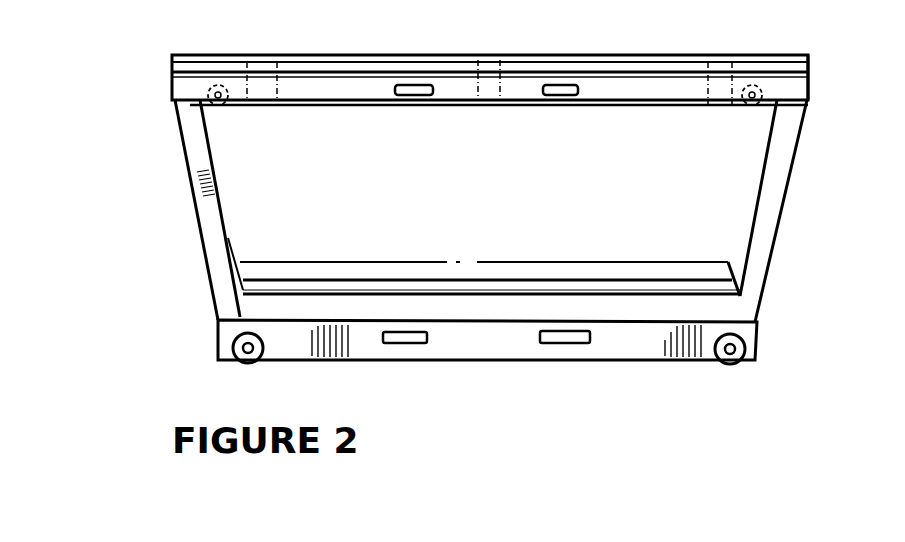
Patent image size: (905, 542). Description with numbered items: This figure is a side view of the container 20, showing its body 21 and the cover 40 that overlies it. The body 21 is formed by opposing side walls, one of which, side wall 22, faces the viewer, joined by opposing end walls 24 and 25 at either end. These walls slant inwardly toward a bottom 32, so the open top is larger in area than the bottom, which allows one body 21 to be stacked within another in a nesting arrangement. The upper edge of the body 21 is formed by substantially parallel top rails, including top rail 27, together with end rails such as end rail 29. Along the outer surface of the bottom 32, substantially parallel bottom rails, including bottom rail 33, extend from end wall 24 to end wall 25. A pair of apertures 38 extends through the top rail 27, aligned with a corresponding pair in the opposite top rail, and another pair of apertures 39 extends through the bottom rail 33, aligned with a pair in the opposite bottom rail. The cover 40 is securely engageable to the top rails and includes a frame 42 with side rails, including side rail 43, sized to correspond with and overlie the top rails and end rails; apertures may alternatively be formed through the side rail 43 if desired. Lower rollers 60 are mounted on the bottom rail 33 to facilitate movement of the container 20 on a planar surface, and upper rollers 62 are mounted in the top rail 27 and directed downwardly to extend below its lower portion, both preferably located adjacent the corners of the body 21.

The container 20 is at (150, 238).
The body 21 is at (198, 280).
The side wall 22 is at (725, 210).
The end wall 24 is at (768, 260).
The end wall 25 is at (192, 195).
The top rail 27 is at (690, 0).
The end rail 29 is at (810, 75).
The bottom 32 is at (517, 287).
The bottom rail 33 is at (637, 350).
The apertures 38 is at (543, 104).
The apertures 39 is at (577, 338).
The cover 40 is at (790, 54).
The frame 42 is at (828, 56).
The side rail 43 is at (537, 68).
The lower rollers 60 is at (237, 365).
The upper rollers 62 is at (228, 106).